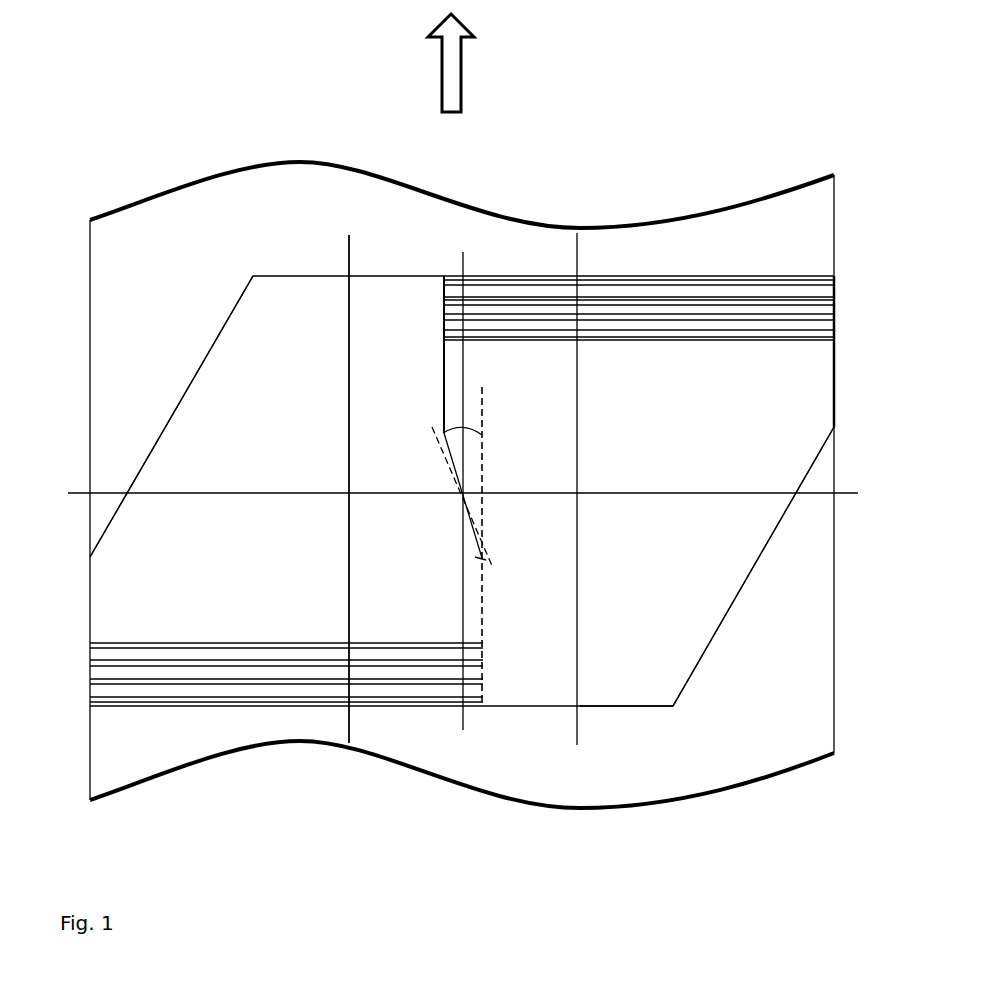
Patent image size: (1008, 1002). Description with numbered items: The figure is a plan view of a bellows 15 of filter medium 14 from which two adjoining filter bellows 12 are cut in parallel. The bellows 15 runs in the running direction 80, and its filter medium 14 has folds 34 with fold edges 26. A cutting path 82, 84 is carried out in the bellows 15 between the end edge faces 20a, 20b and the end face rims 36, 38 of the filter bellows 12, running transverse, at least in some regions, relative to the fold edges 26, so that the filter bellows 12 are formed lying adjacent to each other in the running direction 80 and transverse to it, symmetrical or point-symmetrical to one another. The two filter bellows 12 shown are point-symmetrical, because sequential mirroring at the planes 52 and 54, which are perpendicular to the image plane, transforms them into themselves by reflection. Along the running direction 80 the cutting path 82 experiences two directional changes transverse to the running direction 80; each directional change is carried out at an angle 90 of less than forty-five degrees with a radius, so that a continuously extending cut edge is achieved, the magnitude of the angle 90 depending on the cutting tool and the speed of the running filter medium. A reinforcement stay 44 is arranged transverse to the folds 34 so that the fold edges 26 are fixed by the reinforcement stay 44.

The filter bellows 12 is at (237, 407).
The filter medium 14 is at (767, 200).
The bellows 15 is at (462, 774).
The end edge face 20a is at (162, 400).
The end edge face 20b is at (436, 390).
The fold edges 26 is at (492, 308).
The folds 34 is at (748, 302).
The end face rim 36 is at (393, 276).
The end face rim 38 is at (595, 277).
The reinforcement stay 44 is at (348, 312).
The plane 52 is at (454, 630).
The plane 54 is at (198, 512).
The running direction 80 is at (463, 88).
The cutting path 82 is at (478, 557).
The cutting path 84 is at (603, 704).
The angle 90 is at (482, 414).